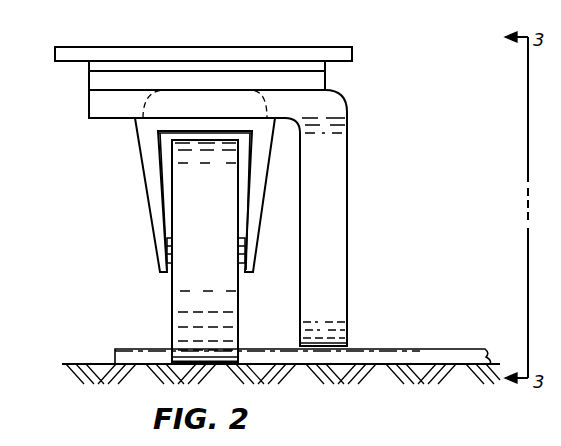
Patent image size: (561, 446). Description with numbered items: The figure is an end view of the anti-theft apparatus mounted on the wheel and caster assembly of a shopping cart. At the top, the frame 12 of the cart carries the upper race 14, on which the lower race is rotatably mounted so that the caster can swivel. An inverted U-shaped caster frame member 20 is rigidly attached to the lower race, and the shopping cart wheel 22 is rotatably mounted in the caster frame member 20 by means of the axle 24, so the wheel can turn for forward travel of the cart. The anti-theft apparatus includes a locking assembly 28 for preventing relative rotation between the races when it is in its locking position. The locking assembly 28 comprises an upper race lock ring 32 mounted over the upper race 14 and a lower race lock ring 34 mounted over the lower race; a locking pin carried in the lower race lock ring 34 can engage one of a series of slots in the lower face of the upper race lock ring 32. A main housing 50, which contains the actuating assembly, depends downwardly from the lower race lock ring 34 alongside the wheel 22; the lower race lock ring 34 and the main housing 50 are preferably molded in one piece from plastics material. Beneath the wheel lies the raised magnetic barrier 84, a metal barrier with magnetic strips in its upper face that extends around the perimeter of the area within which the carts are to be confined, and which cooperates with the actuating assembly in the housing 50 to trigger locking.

The frame 12 is at (190, 100).
The upper race 14 is at (232, 78).
The caster frame member 20 is at (147, 178).
The shopping cart wheel 22 is at (172, 325).
The axle 24 is at (170, 264).
The locking assembly 28 is at (284, 84).
The upper race lock ring 32 is at (128, 75).
The lower race lock ring 34 is at (93, 103).
The main housing 50 is at (348, 182).
The raised magnetic barrier 84 is at (402, 348).